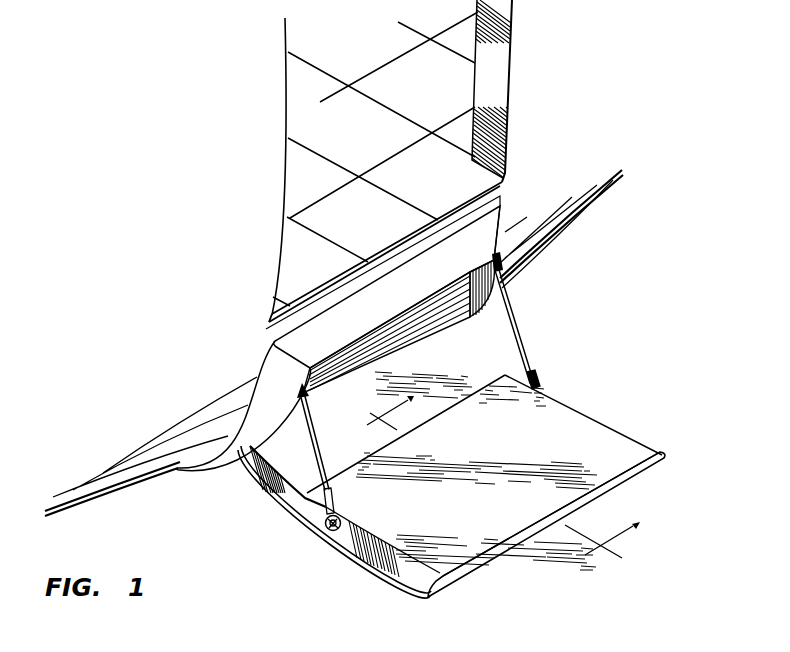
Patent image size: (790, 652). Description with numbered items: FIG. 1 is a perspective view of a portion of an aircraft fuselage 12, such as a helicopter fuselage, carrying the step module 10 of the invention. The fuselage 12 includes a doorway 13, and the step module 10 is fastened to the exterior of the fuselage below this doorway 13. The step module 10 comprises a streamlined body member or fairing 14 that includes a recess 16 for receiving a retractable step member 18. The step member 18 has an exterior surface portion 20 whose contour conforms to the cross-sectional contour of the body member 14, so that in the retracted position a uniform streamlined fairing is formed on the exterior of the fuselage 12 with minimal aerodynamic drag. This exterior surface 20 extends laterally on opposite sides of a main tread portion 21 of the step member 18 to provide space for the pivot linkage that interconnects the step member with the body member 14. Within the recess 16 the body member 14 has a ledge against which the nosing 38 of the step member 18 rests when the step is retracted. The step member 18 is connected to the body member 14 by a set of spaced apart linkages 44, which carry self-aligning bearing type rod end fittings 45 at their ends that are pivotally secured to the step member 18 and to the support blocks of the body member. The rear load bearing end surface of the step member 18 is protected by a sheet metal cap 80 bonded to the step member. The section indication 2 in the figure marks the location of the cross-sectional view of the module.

The step module 10 is at (300, 552).
The aircraft fuselage 12 is at (152, 483).
The doorway 13 is at (288, 188).
The body member or fairing 14 is at (259, 379).
The recess 16 is at (442, 300).
The step member 18 is at (486, 582).
The exterior surface portion 20 is at (370, 578).
The main tread portion 21 is at (476, 506).
The nosing 38 is at (533, 540).
The linkages 44 is at (306, 397).
The rod end fittings 45 is at (502, 266).
The sheet metal cap 80 is at (412, 338).
The section line 2- 2 is at (496, 484).